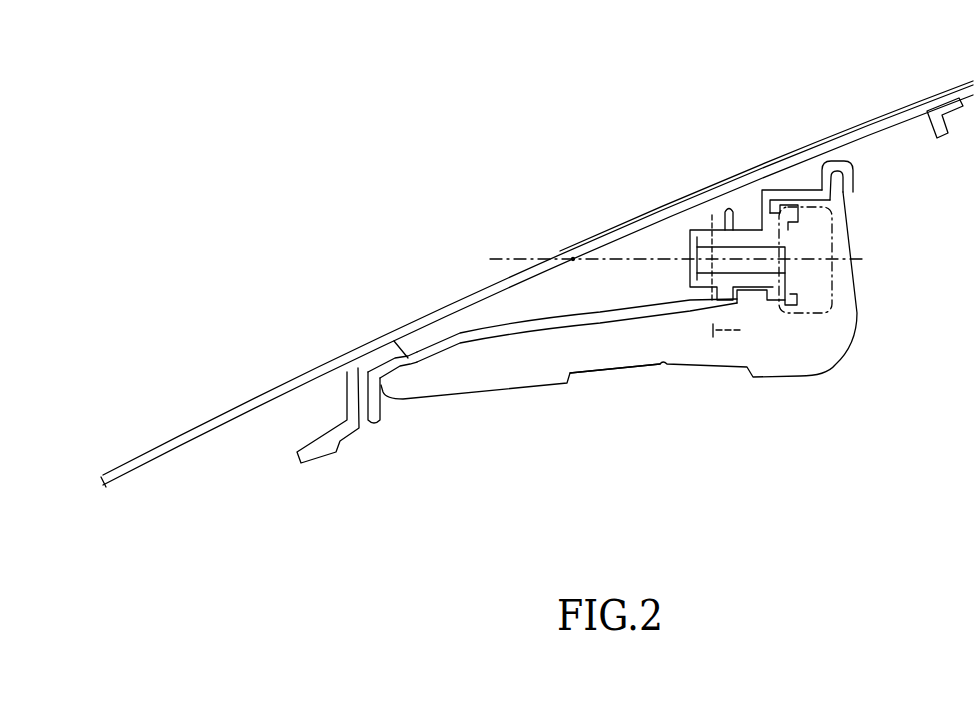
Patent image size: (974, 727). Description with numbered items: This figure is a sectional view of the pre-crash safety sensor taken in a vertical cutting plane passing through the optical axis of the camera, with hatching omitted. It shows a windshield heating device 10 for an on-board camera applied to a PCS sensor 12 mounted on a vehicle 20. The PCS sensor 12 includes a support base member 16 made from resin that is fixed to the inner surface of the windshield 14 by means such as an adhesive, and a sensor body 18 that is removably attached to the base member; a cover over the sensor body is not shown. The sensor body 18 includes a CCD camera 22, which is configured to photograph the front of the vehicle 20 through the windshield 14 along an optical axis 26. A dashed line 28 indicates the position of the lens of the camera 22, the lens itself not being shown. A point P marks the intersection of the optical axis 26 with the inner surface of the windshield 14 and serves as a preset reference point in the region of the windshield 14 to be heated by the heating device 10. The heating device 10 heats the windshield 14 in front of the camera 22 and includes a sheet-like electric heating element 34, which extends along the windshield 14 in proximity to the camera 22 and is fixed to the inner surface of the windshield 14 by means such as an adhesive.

The vehicle 20 is at (282, 170).
The windshield 14 is at (207, 423).
The windshield heating device 10 is at (655, 212).
The support base member 16 is at (322, 460).
The PCS sensor 12 is at (855, 372).
The sensor body 18 is at (682, 374).
The electric heating element 34 is at (465, 298).
The CCD camera 22 is at (840, 262).
The optical axis 26 is at (507, 248).
The intersection point P is at (572, 255).
The dashed line 28 is at (743, 279).